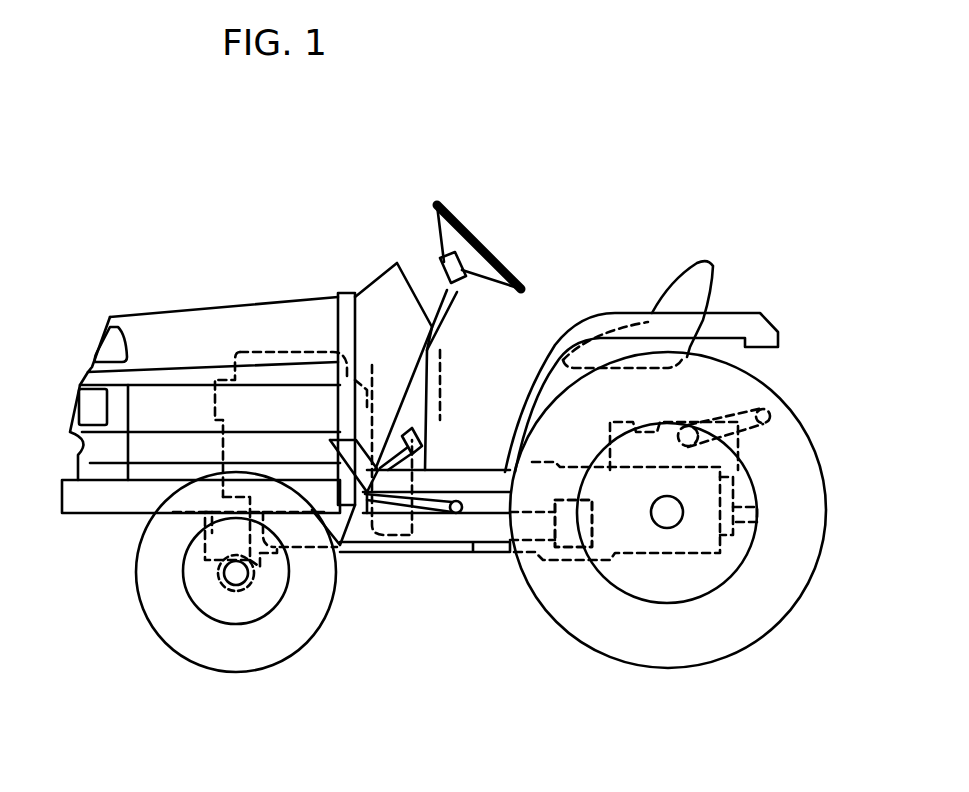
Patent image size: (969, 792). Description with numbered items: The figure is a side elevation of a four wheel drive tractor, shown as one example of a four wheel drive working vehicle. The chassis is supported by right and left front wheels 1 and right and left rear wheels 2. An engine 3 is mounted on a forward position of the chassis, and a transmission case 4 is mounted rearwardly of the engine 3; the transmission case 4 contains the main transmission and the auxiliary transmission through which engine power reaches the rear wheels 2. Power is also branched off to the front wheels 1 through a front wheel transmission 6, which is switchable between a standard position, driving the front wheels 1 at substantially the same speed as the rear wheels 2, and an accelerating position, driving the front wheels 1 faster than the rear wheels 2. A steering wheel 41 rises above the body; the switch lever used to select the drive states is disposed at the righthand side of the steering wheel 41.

The front wheels 1 is at (170, 633).
The rear wheels 2 is at (773, 603).
The engine 3 is at (270, 352).
The transmission case 4 is at (562, 562).
The front wheel transmission 6 is at (568, 500).
The steering wheel 41 is at (505, 262).